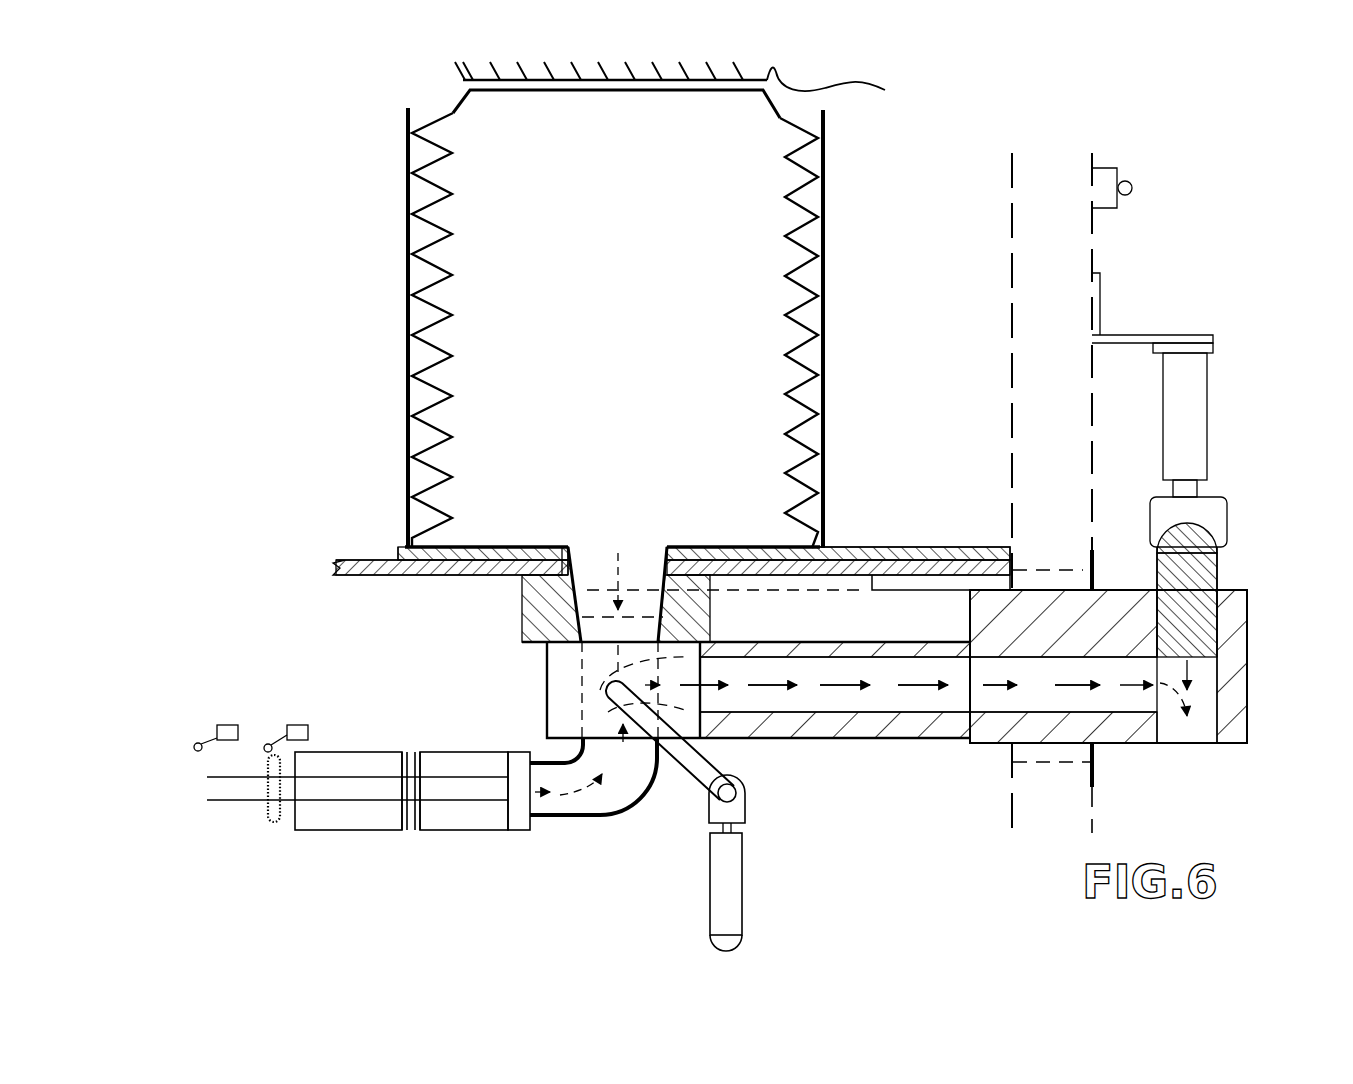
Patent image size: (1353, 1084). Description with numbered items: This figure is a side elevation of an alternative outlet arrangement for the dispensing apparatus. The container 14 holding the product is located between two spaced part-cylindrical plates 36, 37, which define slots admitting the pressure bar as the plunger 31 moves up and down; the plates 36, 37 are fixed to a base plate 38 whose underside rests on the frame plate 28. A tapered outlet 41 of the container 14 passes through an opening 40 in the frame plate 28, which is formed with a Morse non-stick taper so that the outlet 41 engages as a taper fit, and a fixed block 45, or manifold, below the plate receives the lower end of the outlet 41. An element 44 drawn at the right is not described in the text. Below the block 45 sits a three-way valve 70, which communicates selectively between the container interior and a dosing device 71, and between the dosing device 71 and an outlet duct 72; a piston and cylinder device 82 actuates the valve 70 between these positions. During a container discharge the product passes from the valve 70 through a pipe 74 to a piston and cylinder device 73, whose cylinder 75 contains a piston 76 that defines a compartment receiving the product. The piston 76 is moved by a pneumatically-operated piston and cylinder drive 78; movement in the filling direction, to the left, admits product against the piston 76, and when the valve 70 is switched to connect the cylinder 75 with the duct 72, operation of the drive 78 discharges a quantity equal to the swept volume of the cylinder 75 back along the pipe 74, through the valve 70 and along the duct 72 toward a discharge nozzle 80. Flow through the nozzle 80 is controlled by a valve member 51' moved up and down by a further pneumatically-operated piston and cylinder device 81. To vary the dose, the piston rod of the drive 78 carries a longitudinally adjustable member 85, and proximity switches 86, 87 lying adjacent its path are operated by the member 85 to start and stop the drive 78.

The container 14 is at (453, 113).
The plunger 31 is at (687, 87).
The part-cylindrical plate 37 is at (408, 272).
The part-cylindrical plate 36 is at (823, 318).
The frame plate 28 is at (362, 557).
The base plate 38 is at (863, 545).
The outlet 41 is at (642, 574).
The fixed block 45 is at (538, 607).
The opening 40 is at (712, 588).
The frame member 44 is at (1097, 252).
The pneumatically-operated piston and cylinder device 81 is at (1193, 430).
The valve member 51' is at (1237, 577).
The discharge nozzle 80 is at (1226, 756).
The outlet duct 72 is at (880, 715).
The three-way valve 70 is at (537, 710).
The dosing device 71 is at (409, 773).
The piston and cylinder device 73 is at (440, 752).
The pipe 74 is at (610, 822).
The cylinder 75 is at (412, 752).
The piston 76 is at (512, 752).
The pneumatically-operated piston and cylinder drive 78 is at (285, 828).
The longitudinally adjustable member 85 is at (262, 803).
The proximity switch 86 is at (302, 725).
The proximity switch 87 is at (228, 725).
The piston and cylinder device 82 is at (733, 887).